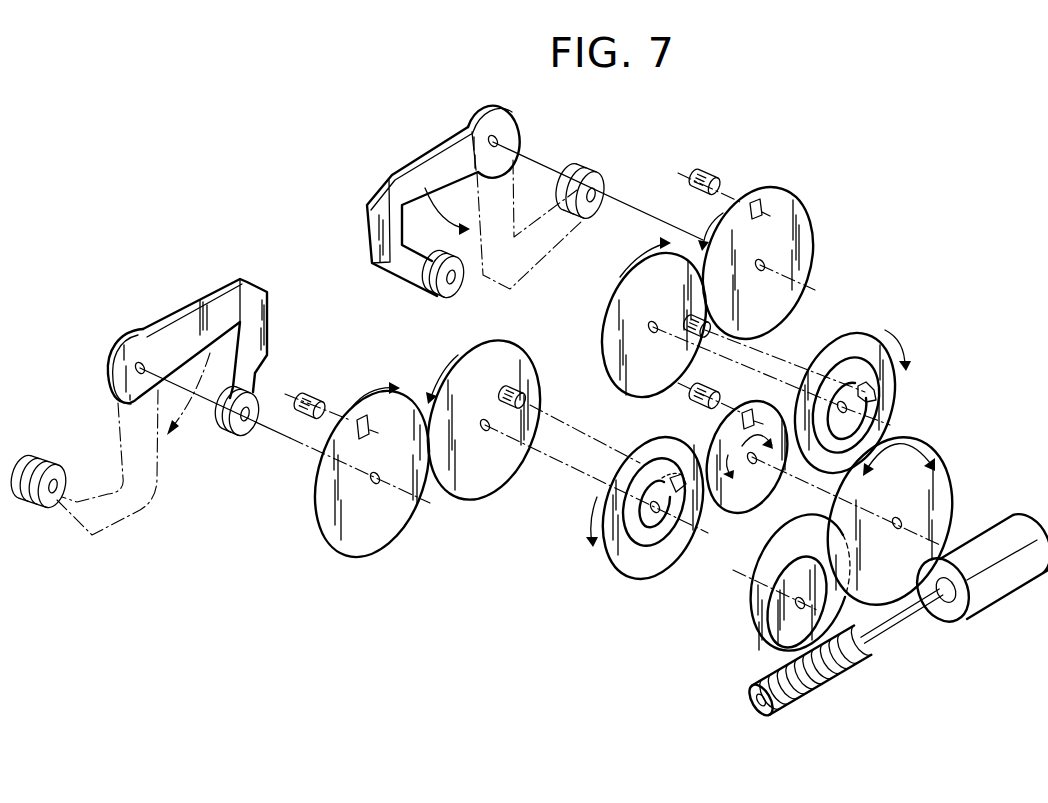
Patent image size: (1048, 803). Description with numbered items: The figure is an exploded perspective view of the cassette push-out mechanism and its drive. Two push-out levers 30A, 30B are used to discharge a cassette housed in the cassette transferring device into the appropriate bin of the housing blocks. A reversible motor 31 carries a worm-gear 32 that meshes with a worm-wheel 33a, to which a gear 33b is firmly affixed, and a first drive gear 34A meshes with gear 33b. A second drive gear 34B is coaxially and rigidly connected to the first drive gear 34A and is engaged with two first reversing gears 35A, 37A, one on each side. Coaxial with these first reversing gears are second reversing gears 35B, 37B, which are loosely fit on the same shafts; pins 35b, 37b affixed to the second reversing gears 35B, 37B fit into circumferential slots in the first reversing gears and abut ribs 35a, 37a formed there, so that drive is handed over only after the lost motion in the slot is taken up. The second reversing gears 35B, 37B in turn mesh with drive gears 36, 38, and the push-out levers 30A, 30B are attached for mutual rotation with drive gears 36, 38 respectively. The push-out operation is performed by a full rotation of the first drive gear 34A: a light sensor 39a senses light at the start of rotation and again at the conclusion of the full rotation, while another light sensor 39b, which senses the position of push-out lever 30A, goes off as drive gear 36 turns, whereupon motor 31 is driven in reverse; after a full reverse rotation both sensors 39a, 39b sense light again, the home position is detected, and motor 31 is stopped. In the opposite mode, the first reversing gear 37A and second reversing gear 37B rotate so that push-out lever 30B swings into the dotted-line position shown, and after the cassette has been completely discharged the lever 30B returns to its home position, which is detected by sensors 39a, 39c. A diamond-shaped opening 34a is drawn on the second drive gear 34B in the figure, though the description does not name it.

The push-out lever 30A is at (180, 325).
The push-out lever 30B is at (423, 163).
The reversible motor 31 is at (1020, 577).
The worm-gear 32 is at (820, 682).
The worm-wheel 33a is at (763, 647).
The gear 33b is at (780, 597).
The first drive gear 34A is at (928, 445).
The second drive gear 34B is at (748, 498).
The diamond hole of disk 34B 34a is at (738, 420).
The first reversing gear 35A is at (633, 567).
The second reversing gear 35B is at (512, 350).
The rib 35a is at (678, 527).
The pin 35b is at (520, 392).
The drive gear 36 is at (370, 547).
The first reversing gear 37A is at (858, 340).
The second reversing gear 37B is at (607, 330).
The rib 37a is at (880, 387).
The pin 37b is at (772, 321).
The drive gear 38 is at (793, 198).
The light sensor 39a is at (693, 398).
The light sensor 39b is at (313, 400).
The sensor 39c is at (710, 170).